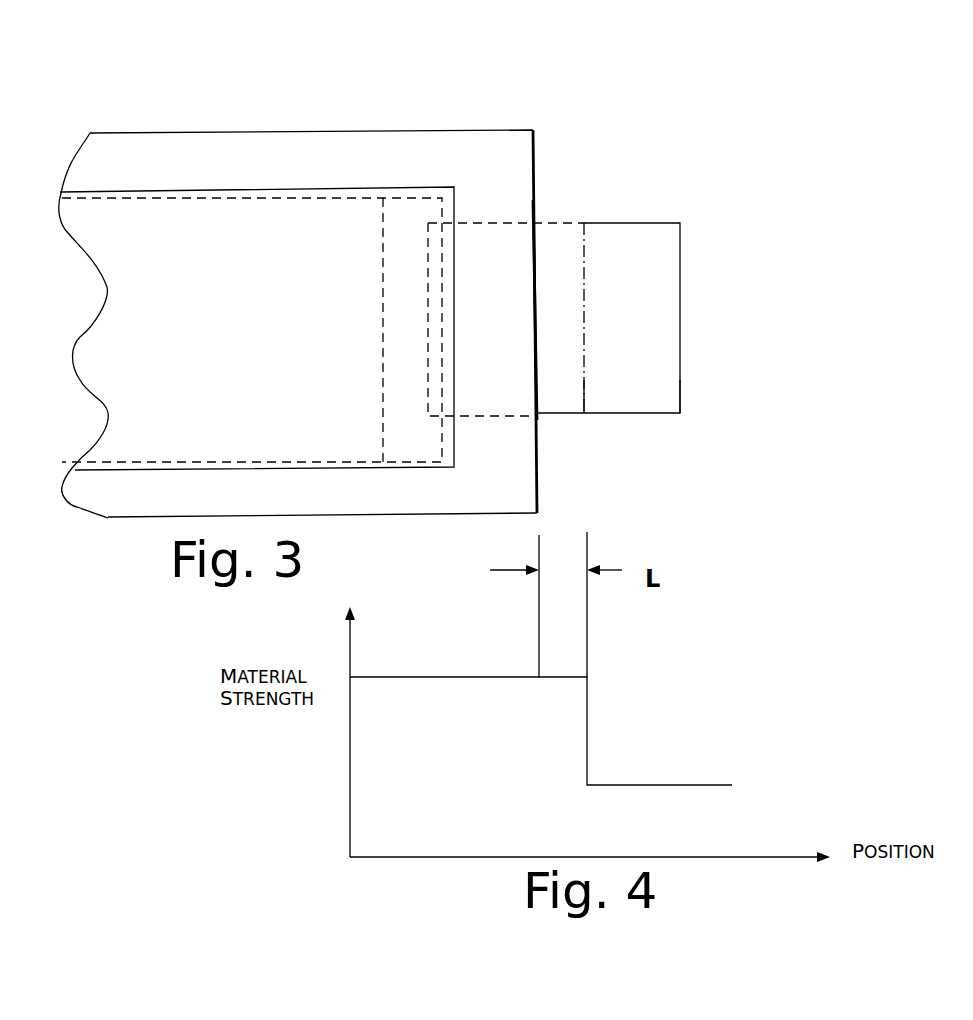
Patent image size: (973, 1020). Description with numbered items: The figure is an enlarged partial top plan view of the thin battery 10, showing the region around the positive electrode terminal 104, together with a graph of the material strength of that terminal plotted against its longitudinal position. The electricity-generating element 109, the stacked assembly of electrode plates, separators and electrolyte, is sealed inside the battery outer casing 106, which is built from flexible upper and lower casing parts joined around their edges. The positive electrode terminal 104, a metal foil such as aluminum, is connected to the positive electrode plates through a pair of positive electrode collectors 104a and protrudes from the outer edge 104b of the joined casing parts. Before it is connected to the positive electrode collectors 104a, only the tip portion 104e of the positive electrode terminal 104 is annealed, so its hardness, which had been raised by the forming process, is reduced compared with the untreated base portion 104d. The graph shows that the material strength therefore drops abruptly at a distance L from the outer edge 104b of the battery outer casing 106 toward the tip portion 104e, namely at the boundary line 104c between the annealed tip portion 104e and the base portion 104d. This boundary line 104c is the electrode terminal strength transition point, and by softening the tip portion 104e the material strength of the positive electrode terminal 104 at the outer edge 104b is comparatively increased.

The thin battery 10 is at (530, 86).
The positive electrode terminal 104 is at (668, 305).
The positive electrode collectors 104a is at (407, 328).
The outer edge 104b is at (548, 190).
The boundary line 104c is at (596, 300).
The base portion 104d is at (568, 378).
The tip portion 104e is at (667, 387).
The battery outer casing 106 is at (263, 163).
The electricity-generating element 109 is at (141, 250).